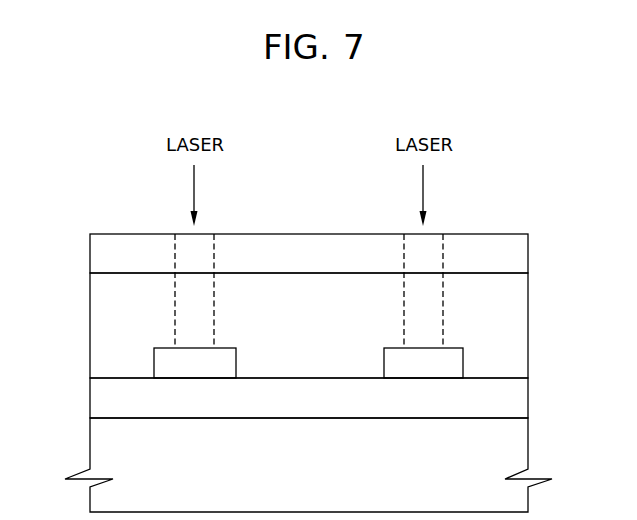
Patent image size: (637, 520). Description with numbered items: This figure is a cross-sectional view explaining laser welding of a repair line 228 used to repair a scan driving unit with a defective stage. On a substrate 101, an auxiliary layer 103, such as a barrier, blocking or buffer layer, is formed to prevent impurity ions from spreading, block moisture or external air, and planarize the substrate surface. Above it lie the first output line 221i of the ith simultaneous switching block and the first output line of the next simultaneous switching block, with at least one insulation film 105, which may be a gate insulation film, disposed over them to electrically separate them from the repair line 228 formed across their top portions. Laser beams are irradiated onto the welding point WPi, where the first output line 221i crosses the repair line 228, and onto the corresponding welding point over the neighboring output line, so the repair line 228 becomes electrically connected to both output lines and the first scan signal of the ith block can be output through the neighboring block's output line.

The repair line 228 is at (515, 253).
The insulation film 105 is at (515, 302).
The first output line of the ith simultaneous switching block 221i is at (154, 362).
The auxiliary layer 103 is at (515, 396).
The substrate 101 is at (515, 446).
The welding point WPi is at (168, 214).